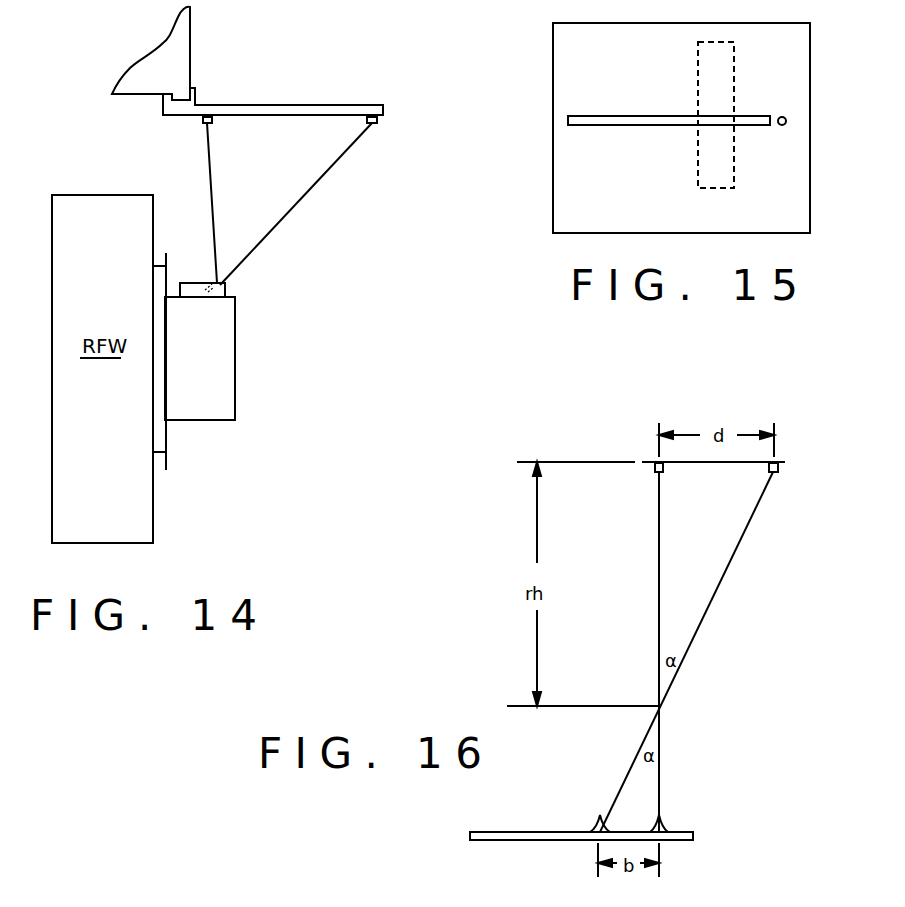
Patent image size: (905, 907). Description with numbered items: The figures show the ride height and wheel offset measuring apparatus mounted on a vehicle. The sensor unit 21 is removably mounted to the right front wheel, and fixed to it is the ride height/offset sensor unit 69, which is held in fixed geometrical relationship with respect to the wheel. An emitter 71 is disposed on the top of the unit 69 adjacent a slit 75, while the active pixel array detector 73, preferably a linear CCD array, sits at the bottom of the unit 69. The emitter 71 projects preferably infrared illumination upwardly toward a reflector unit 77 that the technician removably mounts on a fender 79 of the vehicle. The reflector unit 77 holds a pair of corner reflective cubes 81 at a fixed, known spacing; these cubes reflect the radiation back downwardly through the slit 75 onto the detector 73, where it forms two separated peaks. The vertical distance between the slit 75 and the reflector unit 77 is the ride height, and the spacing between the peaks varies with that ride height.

In FIG. 14, the sensor unit 21 is at (216, 362).
In FIG. 14, the ride height/offset sensor unit 69 is at (195, 283).
In FIG. 15, the ride height/offset sensor unit 69 is at (650, 65).
In FIG. 15, the emitter 71 is at (785, 125).
In FIG. 15, the active pixel array detector 73 is at (735, 96).
In FIG. 16, the active pixel array detector 73 is at (547, 832).
In FIG. 15, the slit 75 is at (625, 115).
In FIG. 14, the reflector unit 77 is at (273, 105).
In FIG. 16, the reflector unit 77 is at (780, 462).
In FIG. 14, the fender 79 is at (189, 39).
In FIG. 14, the corner reflective cubes 81 is at (212, 120).
In FIG. 16, the corner reflective cubes 81 is at (656, 472).